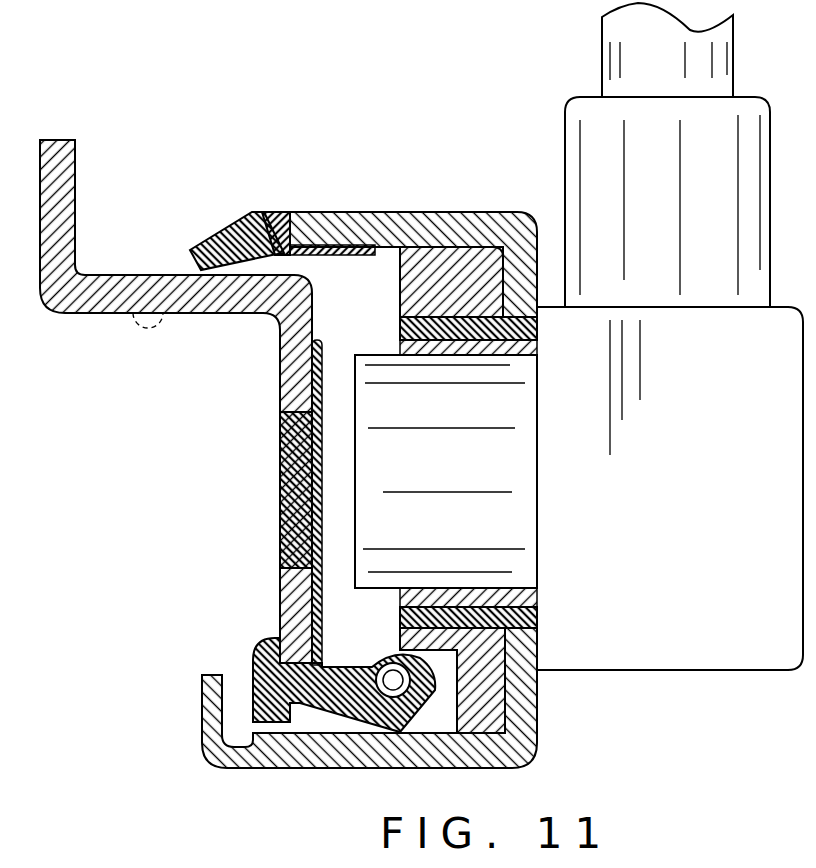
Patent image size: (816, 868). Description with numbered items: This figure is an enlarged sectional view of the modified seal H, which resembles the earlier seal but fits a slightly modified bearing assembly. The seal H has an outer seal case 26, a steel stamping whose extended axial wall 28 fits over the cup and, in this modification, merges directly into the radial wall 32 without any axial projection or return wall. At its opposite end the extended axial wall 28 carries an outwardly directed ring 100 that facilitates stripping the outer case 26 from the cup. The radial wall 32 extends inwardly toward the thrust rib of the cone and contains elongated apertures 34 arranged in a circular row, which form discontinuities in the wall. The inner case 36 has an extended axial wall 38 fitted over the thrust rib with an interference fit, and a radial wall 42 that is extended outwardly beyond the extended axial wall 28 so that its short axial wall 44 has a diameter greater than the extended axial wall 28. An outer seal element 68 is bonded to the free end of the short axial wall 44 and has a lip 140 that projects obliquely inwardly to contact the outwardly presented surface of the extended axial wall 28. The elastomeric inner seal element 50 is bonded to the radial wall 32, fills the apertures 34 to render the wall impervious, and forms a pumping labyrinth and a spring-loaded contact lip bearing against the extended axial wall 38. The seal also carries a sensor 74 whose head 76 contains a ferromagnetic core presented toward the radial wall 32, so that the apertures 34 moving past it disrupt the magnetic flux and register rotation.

The outwardly directed ring 100 is at (176, 383).
The extended axial wall 28 is at (176, 401).
The outer seal case 26 is at (220, 313).
The radial wall 32 is at (280, 398).
The elongated apertures 34 is at (280, 483).
The lip 140 is at (222, 230).
The outer seal element 68 is at (280, 217).
The short axial wall 44 is at (377, 227).
The head 76 is at (546, 336).
The sensor 74 is at (356, 487).
The extended axial wall 38 is at (403, 728).
The inner case 36 is at (527, 760).
The radial wall 42 is at (527, 698).
The inner seal element 50 is at (258, 650).
The modified seal H is at (168, 575).